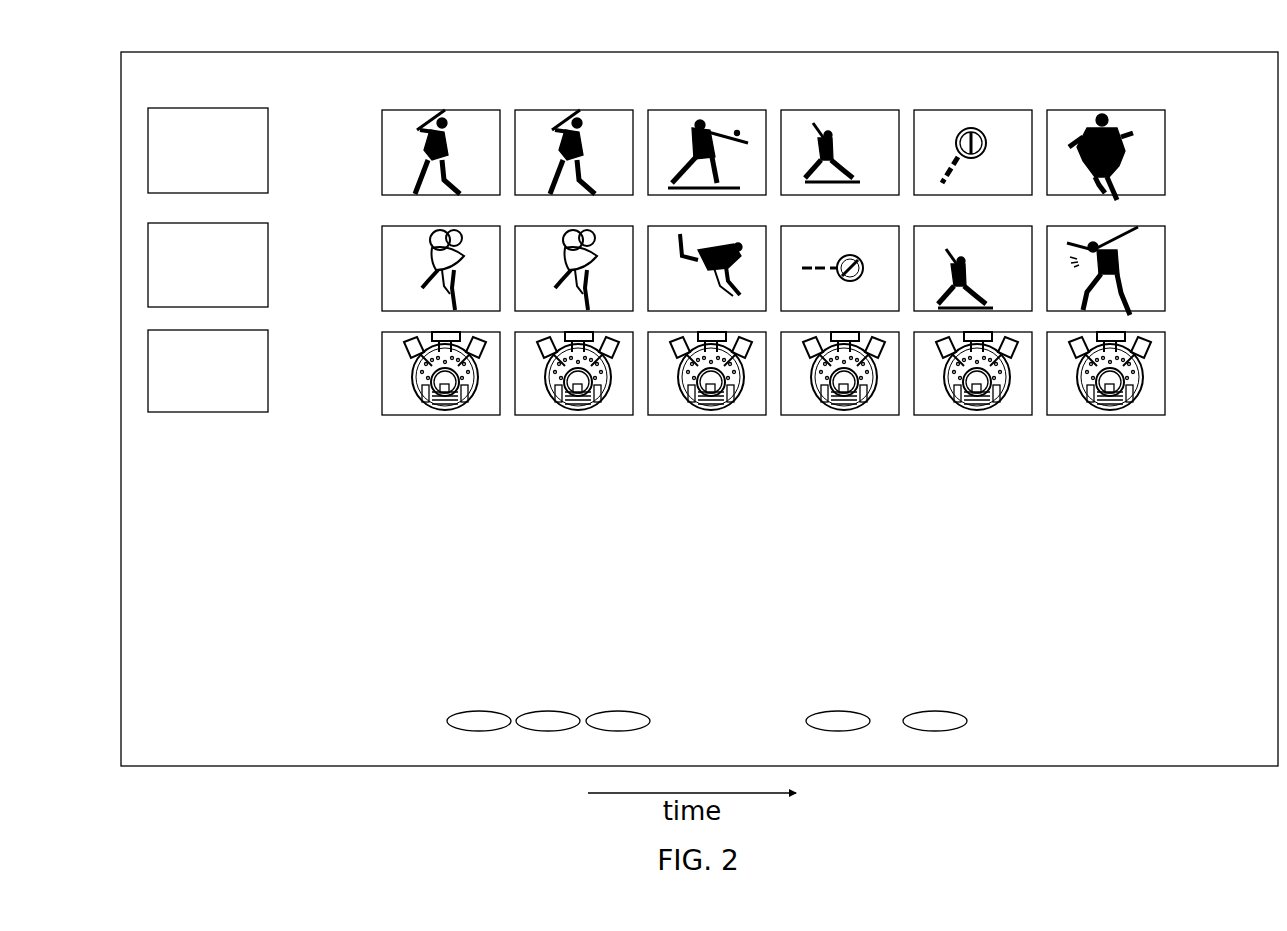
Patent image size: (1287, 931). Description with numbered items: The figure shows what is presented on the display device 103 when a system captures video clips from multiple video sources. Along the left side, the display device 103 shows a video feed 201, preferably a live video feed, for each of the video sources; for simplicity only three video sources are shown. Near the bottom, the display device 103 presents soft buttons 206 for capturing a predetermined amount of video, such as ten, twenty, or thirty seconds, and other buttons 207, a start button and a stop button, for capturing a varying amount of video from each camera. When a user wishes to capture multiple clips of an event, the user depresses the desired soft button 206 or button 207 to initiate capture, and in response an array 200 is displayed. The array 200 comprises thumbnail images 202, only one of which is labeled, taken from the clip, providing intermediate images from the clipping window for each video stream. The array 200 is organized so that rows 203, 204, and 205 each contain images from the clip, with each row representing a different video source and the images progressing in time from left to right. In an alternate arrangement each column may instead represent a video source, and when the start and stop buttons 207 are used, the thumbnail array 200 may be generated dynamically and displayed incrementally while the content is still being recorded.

The display device 103 is at (699, 409).
The array 200 is at (817, 300).
The video feed 201 is at (295, 115).
The thumbnail image 202 is at (464, 111).
The video stream row 203 is at (813, 138).
The video stream row 204 is at (1181, 263).
The video stream row 205 is at (1178, 381).
The soft buttons 206 is at (563, 680).
The buttons 207 is at (891, 680).